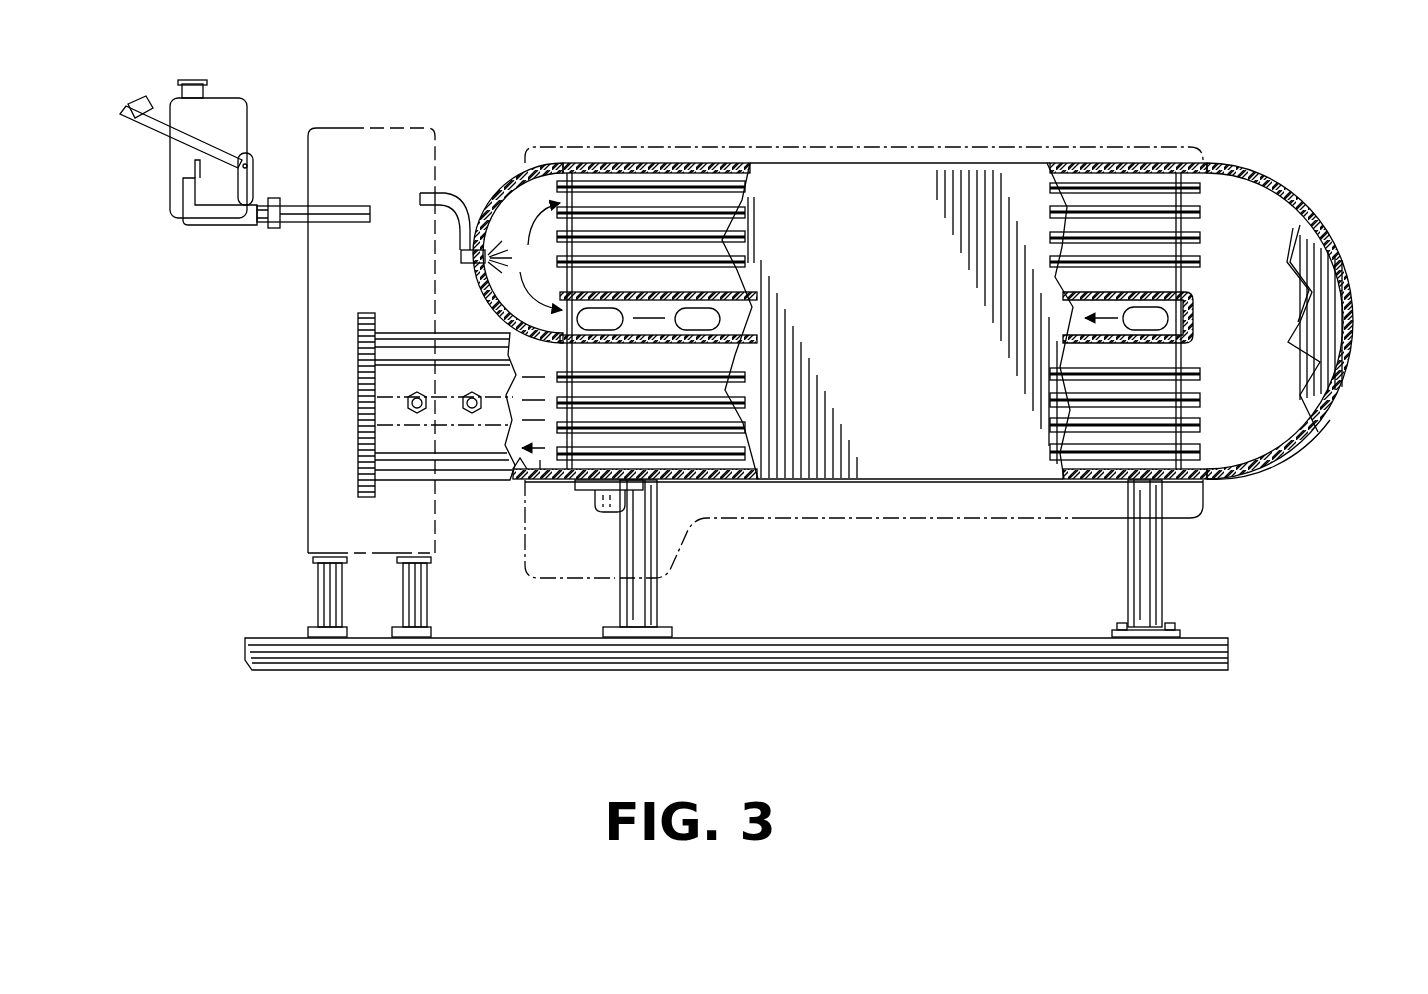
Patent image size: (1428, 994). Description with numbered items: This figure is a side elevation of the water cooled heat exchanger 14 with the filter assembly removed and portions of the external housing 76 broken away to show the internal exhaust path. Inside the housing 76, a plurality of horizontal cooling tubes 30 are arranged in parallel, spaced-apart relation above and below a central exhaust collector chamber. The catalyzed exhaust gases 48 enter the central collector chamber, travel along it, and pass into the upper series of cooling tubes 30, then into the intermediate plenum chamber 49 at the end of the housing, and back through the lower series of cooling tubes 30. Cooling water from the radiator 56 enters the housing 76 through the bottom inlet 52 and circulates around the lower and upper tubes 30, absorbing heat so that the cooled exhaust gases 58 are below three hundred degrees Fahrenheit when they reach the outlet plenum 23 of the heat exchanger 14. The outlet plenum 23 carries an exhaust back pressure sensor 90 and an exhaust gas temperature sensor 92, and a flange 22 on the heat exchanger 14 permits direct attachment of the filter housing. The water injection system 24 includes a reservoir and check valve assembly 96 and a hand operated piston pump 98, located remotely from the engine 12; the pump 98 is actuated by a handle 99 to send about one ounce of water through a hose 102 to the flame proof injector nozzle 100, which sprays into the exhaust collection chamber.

The engine 12 is at (903, 142).
The heat exchanger 14 is at (1352, 274).
The flange 22 is at (366, 483).
The outlet plenum 23 is at (521, 478).
The water injection system 24 is at (292, 226).
The cooling tubes 30 is at (713, 268).
The catalyzed exhaust gases 48 is at (1080, 316).
The intermediate plenum chamber 49 is at (1273, 255).
The bottom inlet 52 is at (596, 508).
The radiator 56 is at (405, 128).
The cooled exhaust gases 58 is at (546, 468).
The external housing 76 is at (1322, 428).
The exhaust back pressure sensor 90 is at (414, 412).
The exhaust gas temperature sensor 92 is at (458, 393).
The reservoir and check valve assembly 96 is at (236, 98).
The hand operated piston pump 98 is at (186, 228).
The handle 99 is at (148, 130).
The flame proof injector nozzle 100 is at (460, 257).
The hose 102 is at (448, 190).